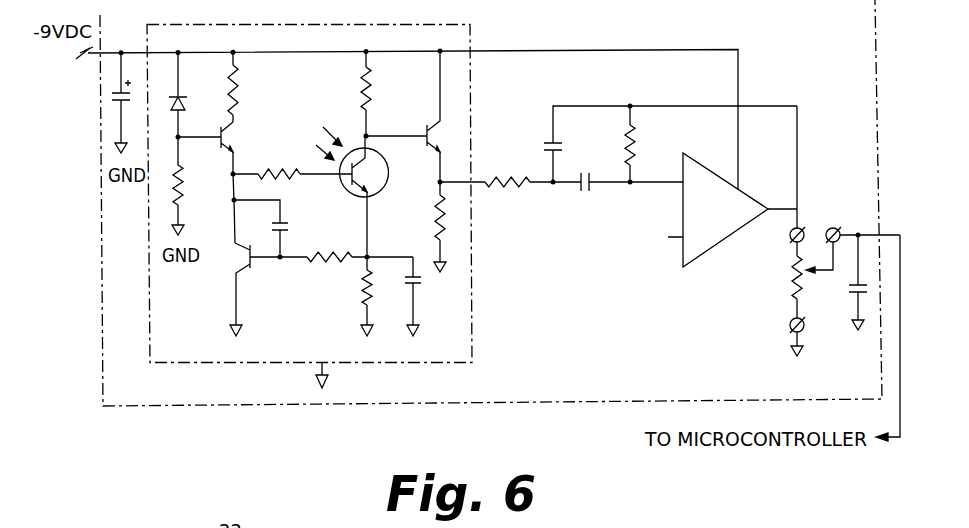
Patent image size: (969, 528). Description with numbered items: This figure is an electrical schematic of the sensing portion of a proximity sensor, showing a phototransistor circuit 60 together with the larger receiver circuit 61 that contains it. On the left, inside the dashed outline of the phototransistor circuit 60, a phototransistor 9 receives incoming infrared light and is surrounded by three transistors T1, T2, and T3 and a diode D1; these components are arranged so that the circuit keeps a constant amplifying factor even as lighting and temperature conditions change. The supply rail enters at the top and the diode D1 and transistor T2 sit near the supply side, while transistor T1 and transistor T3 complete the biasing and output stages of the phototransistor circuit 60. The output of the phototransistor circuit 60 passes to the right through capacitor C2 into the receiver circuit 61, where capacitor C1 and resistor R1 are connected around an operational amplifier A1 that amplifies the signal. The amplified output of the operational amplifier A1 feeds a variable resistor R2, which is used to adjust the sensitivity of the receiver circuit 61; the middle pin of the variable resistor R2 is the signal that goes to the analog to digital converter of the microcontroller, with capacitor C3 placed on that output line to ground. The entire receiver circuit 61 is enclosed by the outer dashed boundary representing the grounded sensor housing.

The phototransistor 9 is at (362, 147).
The phototransistor circuit 60 is at (309, 207).
The receiver circuit 61 is at (491, 203).
The diode D1 is at (190, 144).
The transistor T1 is at (243, 289).
The transistor T2 is at (220, 113).
The transistor T3 is at (415, 161).
The capacitor C1 is at (654, 144).
The capacitor C2 is at (628, 195).
The capacitor C3 is at (861, 282).
The resistor R1 is at (613, 144).
The variable resistor R2 is at (801, 231).
The operational amplifier A1 is at (732, 211).